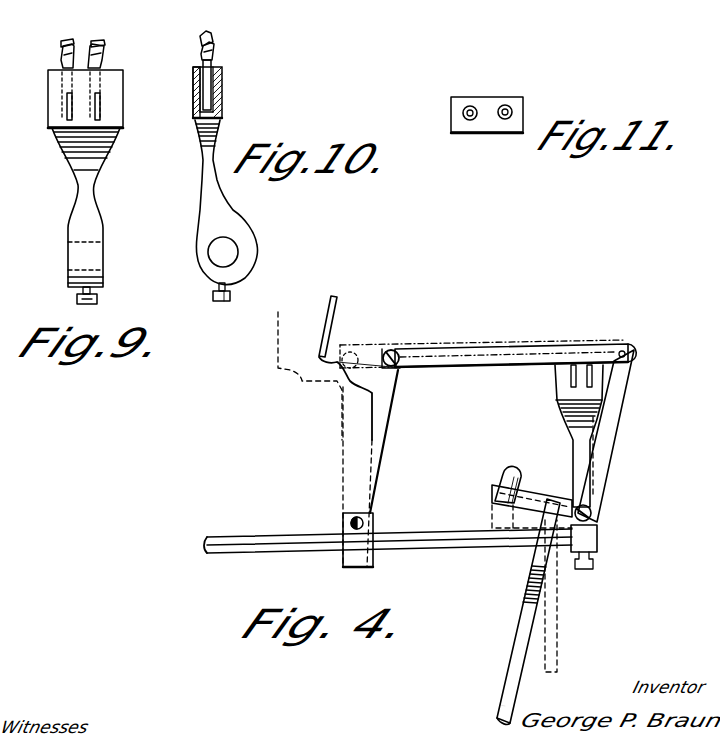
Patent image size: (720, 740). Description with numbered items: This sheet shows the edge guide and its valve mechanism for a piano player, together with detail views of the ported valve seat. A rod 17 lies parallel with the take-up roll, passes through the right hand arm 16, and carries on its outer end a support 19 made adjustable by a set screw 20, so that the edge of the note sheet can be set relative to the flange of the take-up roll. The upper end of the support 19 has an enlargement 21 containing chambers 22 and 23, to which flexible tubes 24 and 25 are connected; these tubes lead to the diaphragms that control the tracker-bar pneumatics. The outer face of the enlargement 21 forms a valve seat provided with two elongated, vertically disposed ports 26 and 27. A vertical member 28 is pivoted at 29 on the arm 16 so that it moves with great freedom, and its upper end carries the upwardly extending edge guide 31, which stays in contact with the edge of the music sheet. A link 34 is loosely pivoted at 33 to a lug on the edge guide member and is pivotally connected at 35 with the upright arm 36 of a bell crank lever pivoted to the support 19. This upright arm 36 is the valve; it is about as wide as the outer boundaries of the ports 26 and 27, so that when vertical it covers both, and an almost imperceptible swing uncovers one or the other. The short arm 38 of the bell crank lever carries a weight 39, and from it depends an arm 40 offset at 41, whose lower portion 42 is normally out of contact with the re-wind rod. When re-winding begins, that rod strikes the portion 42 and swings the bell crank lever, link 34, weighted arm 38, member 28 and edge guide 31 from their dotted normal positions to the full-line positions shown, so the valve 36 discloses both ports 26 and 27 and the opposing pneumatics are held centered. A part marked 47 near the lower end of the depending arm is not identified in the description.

In FIG. 4, the right hand arm 16 is at (378, 534).
In FIG. 4, the rod 17 is at (258, 538).
In FIG. 9, the support 19 is at (88, 217).
In FIG. 10, the support 19 is at (217, 217).
In FIG. 4, the support 19 is at (579, 436).
In FIG. 9, the set screw 20 is at (97, 299).
In FIG. 10, the set screw 20 is at (230, 297).
In FIG. 9, the enlargement 21 is at (52, 97).
In FIG. 10, the enlargement 21 is at (222, 97).
In FIG. 11, the enlargement 21 is at (452, 113).
In FIG. 9, the chamber 22 is at (98, 78).
In FIG. 9, the chamber 23 is at (62, 82).
In FIG. 10, the chamber 23 is at (210, 80).
In FIG. 9, the flexible tube 24 is at (100, 43).
In FIG. 11, the flexible tube 24 is at (507, 107).
In FIG. 9, the flexible tube 25 is at (73, 33).
In FIG. 10, the flexible tube 25 is at (211, 34).
In FIG. 11, the flexible tube 25 is at (470, 108).
In FIG. 9, the port 26 is at (70, 108).
In FIG. 10, the port 26 is at (195, 98).
In FIG. 4, the port 26 is at (571, 378).
In FIG. 9, the port 27 is at (100, 110).
In FIG. 4, the port 27 is at (593, 372).
In FIG. 4, the vertical member 28 is at (385, 436).
In FIG. 4, the pivot 29 is at (362, 521).
In FIG. 4, the edge guide 31 is at (334, 322).
In FIG. 4, the pivot 33 is at (396, 353).
In FIG. 4, the link 34 is at (475, 350).
In FIG. 4, the pivotal connection 35 is at (633, 350).
In FIG. 4, the upright arm 36 is at (604, 430).
In FIG. 4, the short arm 38 is at (527, 498).
In FIG. 4, the weight 39 is at (502, 480).
In FIG. 4, the arm 40 is at (534, 556).
In FIG. 4, the offset 41 is at (537, 594).
In FIG. 4, the lower portion 42 is at (563, 660).
In FIG. 4, the rod end 47 is at (502, 697).